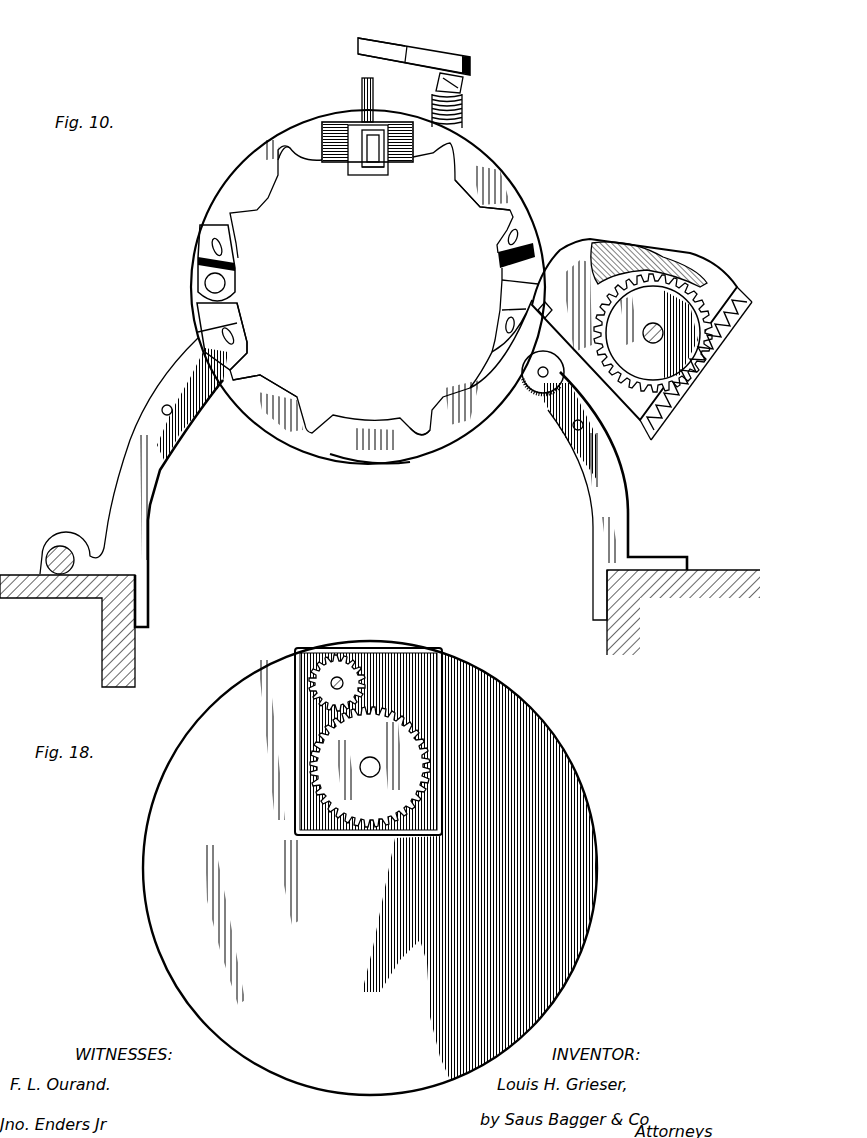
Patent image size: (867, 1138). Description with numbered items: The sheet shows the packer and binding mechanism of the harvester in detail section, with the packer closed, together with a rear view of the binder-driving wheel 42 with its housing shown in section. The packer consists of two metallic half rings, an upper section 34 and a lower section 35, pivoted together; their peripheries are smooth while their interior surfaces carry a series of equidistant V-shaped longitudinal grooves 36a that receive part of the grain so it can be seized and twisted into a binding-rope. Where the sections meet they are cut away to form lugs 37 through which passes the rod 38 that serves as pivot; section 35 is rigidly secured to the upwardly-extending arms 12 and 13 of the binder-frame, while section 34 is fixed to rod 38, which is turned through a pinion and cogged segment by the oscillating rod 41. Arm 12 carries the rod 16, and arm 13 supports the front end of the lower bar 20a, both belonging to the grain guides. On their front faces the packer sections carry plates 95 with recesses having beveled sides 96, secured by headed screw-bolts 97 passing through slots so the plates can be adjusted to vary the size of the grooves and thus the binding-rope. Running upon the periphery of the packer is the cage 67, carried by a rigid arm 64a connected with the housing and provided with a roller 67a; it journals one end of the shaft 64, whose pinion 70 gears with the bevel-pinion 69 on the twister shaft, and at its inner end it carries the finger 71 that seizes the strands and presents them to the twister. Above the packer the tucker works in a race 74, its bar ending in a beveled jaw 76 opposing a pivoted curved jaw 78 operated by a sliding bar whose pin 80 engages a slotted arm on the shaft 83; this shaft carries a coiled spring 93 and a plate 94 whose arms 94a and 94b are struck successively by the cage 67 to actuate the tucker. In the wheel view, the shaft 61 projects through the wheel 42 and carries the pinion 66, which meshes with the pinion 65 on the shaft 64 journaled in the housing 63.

In FIG. 10, the upwardly-extending arm 12 is at (615, 496).
In FIG. 10, the upwardly-extending arm 13 is at (119, 456).
In FIG. 10, the rod or bar 16 is at (575, 430).
In FIG. 10, the lower bar 20a is at (182, 418).
In FIG. 10, the packer section 34 is at (316, 122).
In FIG. 10, the lower packer section 35 is at (406, 466).
In FIG. 10, the V-shaped longitudinal grooves 36a is at (292, 158).
In FIG. 10, the lugs 37 is at (229, 297).
In FIG. 10, the rod 38 is at (205, 283).
In FIG. 10, the oscillating rod 41 is at (66, 545).
In FIG. 18, the binder-driving wheel 42 is at (370, 868).
In FIG. 18, the shaft 61 is at (371, 778).
In FIG. 18, the housing 63 is at (305, 733).
In FIG. 10, the shaft 64 is at (650, 332).
In FIG. 18, the shaft 64 is at (331, 684).
In FIG. 10, the rigid arm 64a is at (646, 258).
In FIG. 18, the pinion 65 is at (340, 649).
In FIG. 18, the pinion 66 is at (370, 767).
In FIG. 10, the cage 67 is at (634, 324).
In FIG. 10, the roller 67a is at (541, 398).
In FIG. 10, the bevel-pinion 69 is at (696, 363).
In FIG. 10, the pinion 70 is at (654, 344).
In FIG. 10, the finger 71 is at (498, 350).
In FIG. 10, the race 74 is at (388, 168).
In FIG. 10, the jaw 76 is at (368, 170).
In FIG. 10, the curved jaw 78 is at (382, 144).
In FIG. 10, the pin 80 is at (374, 92).
In FIG. 10, the shaft 83 is at (463, 82).
In FIG. 10, the coiled spring 93 is at (463, 119).
In FIG. 10, the plate 94 is at (452, 58).
In FIG. 10, the projecting arm 94a is at (432, 68).
In FIG. 10, the projecting arm 94b is at (395, 42).
In FIG. 10, the plates 95 is at (245, 178).
In FIG. 10, the beveled sides 96 is at (483, 212).
In FIG. 10, the headed screw-bolts 97 is at (225, 247).